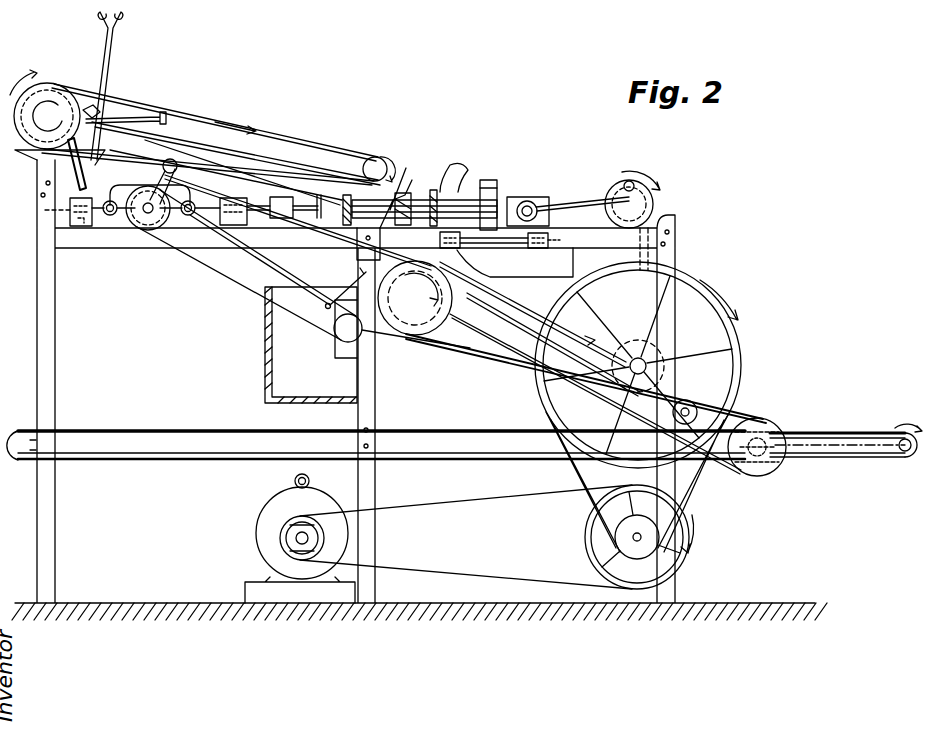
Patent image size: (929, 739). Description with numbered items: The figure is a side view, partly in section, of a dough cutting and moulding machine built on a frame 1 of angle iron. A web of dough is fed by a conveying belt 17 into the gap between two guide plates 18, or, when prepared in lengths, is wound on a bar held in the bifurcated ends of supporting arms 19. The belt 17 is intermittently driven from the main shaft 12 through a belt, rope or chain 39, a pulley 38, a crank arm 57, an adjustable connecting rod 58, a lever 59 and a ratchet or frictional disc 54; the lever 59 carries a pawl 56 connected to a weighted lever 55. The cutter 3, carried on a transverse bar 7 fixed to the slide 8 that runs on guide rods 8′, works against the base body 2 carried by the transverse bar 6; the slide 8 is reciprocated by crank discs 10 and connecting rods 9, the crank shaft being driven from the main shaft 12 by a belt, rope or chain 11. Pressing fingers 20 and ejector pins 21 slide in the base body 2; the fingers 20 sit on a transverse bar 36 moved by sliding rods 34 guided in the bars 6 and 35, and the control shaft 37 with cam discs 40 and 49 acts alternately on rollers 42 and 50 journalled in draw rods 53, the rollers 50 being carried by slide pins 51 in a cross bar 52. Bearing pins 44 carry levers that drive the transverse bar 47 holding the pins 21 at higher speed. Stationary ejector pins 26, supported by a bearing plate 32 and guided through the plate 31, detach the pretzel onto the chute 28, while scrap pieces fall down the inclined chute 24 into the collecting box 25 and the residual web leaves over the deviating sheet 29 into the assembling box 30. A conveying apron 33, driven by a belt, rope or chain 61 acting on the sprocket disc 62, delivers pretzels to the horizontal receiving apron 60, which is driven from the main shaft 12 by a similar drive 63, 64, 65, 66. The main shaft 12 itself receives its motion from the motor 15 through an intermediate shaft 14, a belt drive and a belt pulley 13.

The frame 1 is at (45, 260).
The base body 2 is at (357, 250).
The cutter 3 is at (425, 200).
The transverse bar 6 is at (372, 158).
The transverse bar 7 is at (416, 195).
The slide 8 is at (535, 200).
The guide rods 8′ is at (536, 249).
The connecting rods 9 is at (580, 203).
The crank discs 10 is at (622, 184).
The belt, rope or chain 11 is at (660, 255).
The main shaft 12 is at (730, 350).
The belt pulley 13 is at (738, 372).
The intermediate shaft 14 is at (660, 545).
The motor 15 is at (262, 537).
The conveying belt 17 is at (272, 140).
The guide plates 18 is at (402, 170).
The supporting arms 19 is at (113, 60).
The pressing fingers 20 is at (350, 165).
The ejector pins 21 is at (310, 152).
The inclined chute 24 is at (492, 244).
The collecting box 25 is at (556, 275).
The ejector pins 26 is at (462, 168).
The chute 28 is at (450, 249).
The deviating sheet 29 is at (352, 296).
The assembling box 30 is at (270, 362).
The guiding plate 31 is at (440, 200).
The bearing plate 32 is at (500, 190).
The conveying apron 33 is at (488, 320).
The sliding rods 34 is at (258, 215).
The transverse bar 35 is at (232, 228).
The transverse bar 36 is at (340, 180).
The control shaft 37 is at (135, 225).
The pulley 38 is at (150, 218).
The belt, rope or chain 39 is at (220, 260).
The cam discs 40 is at (184, 217).
The rollers 42 is at (190, 232).
The bearing pins 44 is at (262, 178).
The transverse bar 47 is at (300, 180).
The cam discs 49 is at (110, 217).
The rollers 50 is at (104, 214).
The slide pins 51 is at (70, 200).
The cross bar 52 is at (72, 217).
The draw rods 53 is at (112, 188).
The disc 54 is at (60, 90).
The weighted lever 55 is at (92, 105).
The pawl 56 is at (110, 124).
The crank arm 57 is at (200, 165).
The connecting rod 58 is at (170, 160).
The lever 59 is at (70, 165).
The receiving apron 60 is at (95, 432).
The belt, rope or chain 61 is at (432, 325).
The sprocket disc 62 is at (410, 335).
The drive element 63 is at (740, 412).
The drive element 64 is at (752, 470).
The drive element 65 is at (815, 460).
The drive element 66 is at (900, 458).